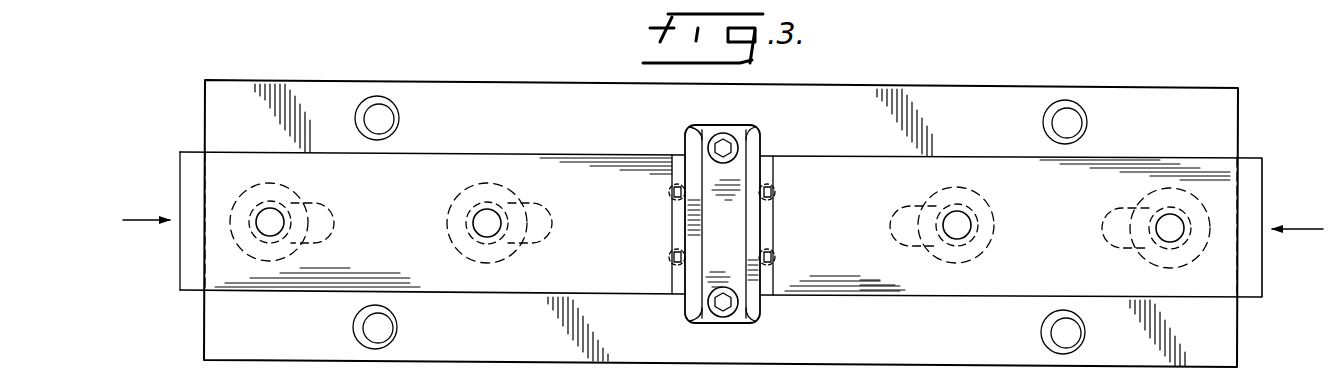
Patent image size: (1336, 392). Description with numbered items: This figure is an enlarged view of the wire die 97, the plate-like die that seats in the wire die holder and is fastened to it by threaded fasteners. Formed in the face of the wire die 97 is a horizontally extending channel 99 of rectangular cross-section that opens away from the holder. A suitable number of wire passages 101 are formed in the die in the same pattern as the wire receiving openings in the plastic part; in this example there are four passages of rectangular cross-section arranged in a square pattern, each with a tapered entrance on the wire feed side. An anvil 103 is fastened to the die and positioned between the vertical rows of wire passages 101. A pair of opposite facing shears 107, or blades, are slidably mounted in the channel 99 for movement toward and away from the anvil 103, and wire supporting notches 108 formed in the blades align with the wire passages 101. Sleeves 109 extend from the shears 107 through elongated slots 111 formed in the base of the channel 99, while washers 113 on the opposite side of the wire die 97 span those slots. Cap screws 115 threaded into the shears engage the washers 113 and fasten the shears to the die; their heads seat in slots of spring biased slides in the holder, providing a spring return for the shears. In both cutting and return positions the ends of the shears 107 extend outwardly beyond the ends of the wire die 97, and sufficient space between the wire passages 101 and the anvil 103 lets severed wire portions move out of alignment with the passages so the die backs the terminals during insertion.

The wire die 97 is at (1157, 82).
The horizontally extending channel 99 is at (490, 158).
The wire passages 101 is at (675, 250).
The anvil 103 is at (734, 167).
The shears 107 is at (186, 262).
The wire supporting notches 108 is at (673, 192).
The sleeves 109 is at (303, 205).
The elongated slots 111 is at (327, 236).
The washers 113 is at (262, 190).
The cap screws 115 is at (270, 222).